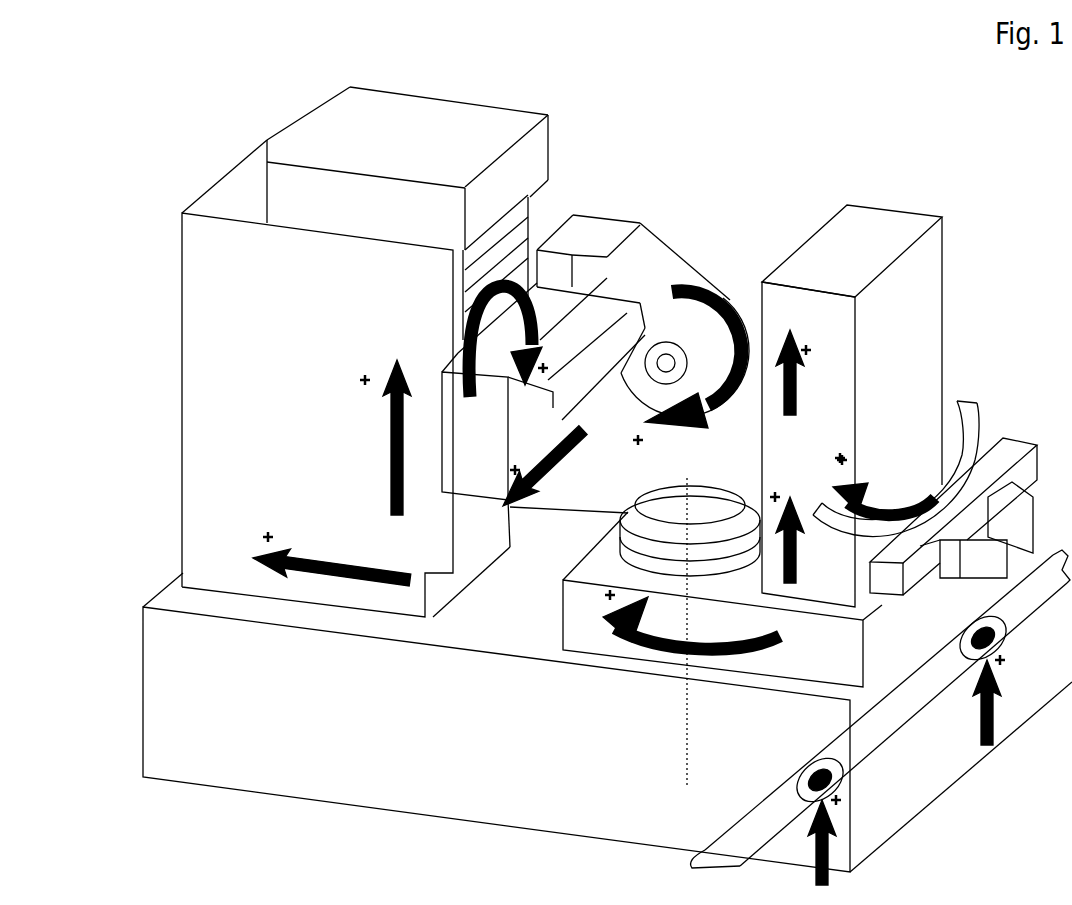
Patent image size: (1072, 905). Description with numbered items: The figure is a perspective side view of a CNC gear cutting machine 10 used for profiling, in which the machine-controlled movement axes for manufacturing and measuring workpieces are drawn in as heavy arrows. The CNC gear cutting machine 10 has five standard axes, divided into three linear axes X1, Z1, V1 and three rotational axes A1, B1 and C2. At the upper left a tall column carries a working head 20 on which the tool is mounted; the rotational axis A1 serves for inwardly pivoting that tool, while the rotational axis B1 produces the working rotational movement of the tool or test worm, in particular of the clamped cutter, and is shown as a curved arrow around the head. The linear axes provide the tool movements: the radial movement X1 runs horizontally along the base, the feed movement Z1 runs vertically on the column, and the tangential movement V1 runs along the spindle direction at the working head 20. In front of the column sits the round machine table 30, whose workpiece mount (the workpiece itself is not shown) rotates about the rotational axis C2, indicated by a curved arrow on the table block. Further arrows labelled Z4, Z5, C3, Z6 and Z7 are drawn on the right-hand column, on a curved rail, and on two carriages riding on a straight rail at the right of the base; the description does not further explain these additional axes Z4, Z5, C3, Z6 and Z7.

The CNC gear cutting machine 10 is at (972, 160).
The working head 20 is at (683, 277).
The machine table 30 is at (648, 631).
The linear axis Z1 is at (388, 407).
The linear axis X1 is at (301, 551).
The rotational axis A1 is at (508, 369).
The rotational axis B1 is at (662, 368).
The linear axis V1 is at (509, 497).
The vertical axis of right column Z4 is at (800, 349).
The vertical axis of tool magazine Z5 is at (807, 511).
The rotational axis C2 is at (691, 619).
The rotary axis of curved rail C3 is at (884, 482).
The vertical axis of first rail carriage Z6 is at (1006, 676).
The vertical axis of second rail carriage Z7 is at (844, 817).